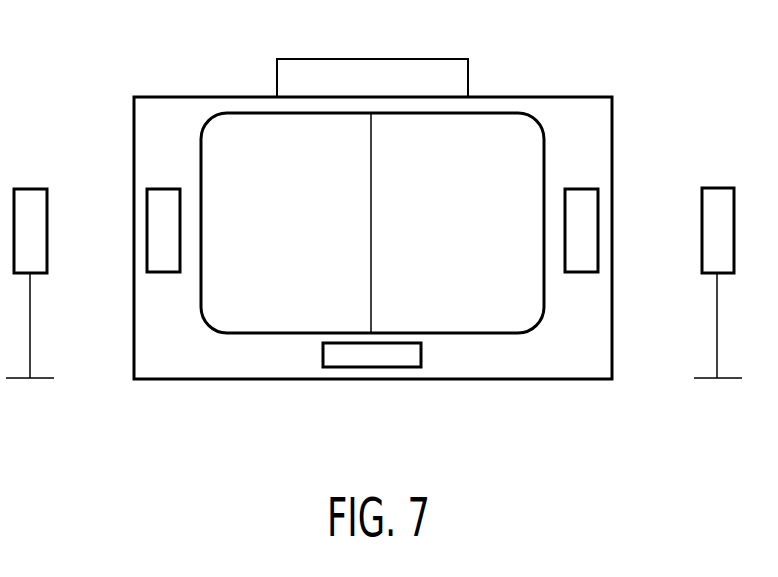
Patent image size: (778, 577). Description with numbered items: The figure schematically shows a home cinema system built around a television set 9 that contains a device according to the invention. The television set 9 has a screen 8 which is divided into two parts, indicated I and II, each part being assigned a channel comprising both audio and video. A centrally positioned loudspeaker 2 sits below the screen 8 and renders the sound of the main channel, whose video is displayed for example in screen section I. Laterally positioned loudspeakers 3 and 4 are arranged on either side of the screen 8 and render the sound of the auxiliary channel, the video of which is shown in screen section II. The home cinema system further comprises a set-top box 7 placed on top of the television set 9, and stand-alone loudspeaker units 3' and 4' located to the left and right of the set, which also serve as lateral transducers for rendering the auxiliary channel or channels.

The centrally positioned loudspeaker 2 is at (357, 363).
The laterally positioned loudspeaker 3 is at (139, 230).
The laterally positioned loudspeaker 4 is at (609, 230).
The stand-alone loudspeaker unit 3' is at (30, 252).
The stand-alone loudspeaker unit 4' is at (718, 252).
The set-top box 7 is at (400, 59).
The screen 8 is at (498, 112).
The television set 9 is at (612, 150).